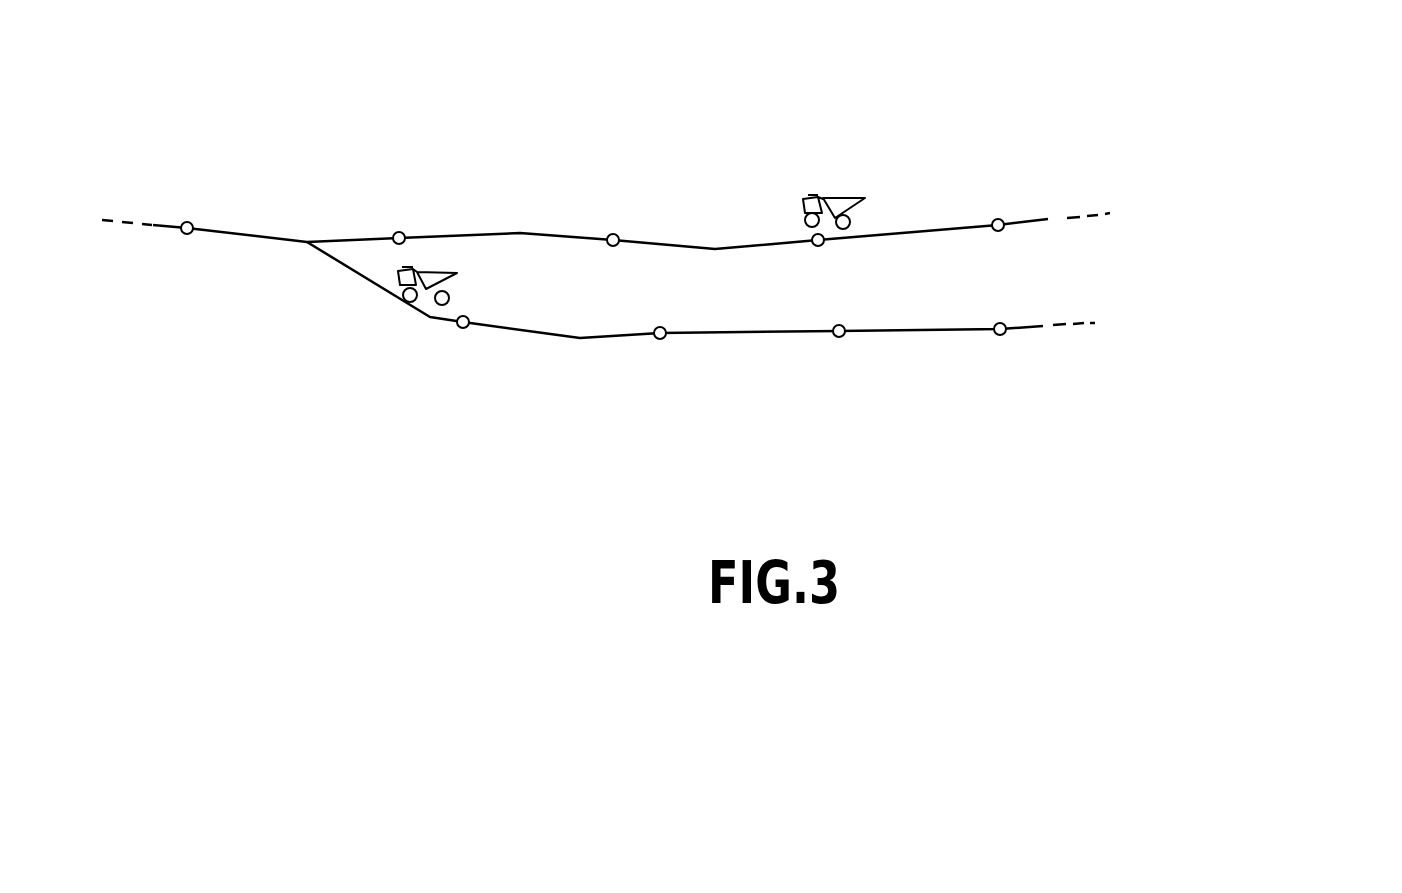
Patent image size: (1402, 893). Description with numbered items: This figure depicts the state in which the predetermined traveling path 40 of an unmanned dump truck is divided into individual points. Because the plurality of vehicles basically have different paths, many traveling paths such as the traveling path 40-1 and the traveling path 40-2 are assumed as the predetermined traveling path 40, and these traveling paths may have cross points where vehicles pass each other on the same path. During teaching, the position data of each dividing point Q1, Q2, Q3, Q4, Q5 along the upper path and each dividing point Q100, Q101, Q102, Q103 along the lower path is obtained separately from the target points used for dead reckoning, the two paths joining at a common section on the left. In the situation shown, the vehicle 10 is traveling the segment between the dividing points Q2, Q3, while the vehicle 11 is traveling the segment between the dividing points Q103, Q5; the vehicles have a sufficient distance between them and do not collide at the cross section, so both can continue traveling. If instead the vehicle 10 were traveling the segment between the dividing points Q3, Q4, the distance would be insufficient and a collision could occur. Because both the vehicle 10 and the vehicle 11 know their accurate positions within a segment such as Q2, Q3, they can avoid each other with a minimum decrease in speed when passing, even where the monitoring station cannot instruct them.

The vehicle 10 is at (841, 197).
The vehicle 11 is at (435, 268).
The predetermined traveling path 40 is at (742, 192).
The traveling path 40-1 is at (1048, 219).
The traveling path 40-2 is at (1030, 325).
The dividing point Q1 is at (994, 219).
The dividing point Q2 is at (812, 237).
The dividing point Q3 is at (613, 234).
The dividing point Q4 is at (398, 232).
The dividing point Q5 is at (188, 222).
The dividing point Q100 is at (1000, 335).
The dividing point Q101 is at (839, 337).
The dividing point Q102 is at (660, 339).
The dividing point Q103 is at (463, 328).